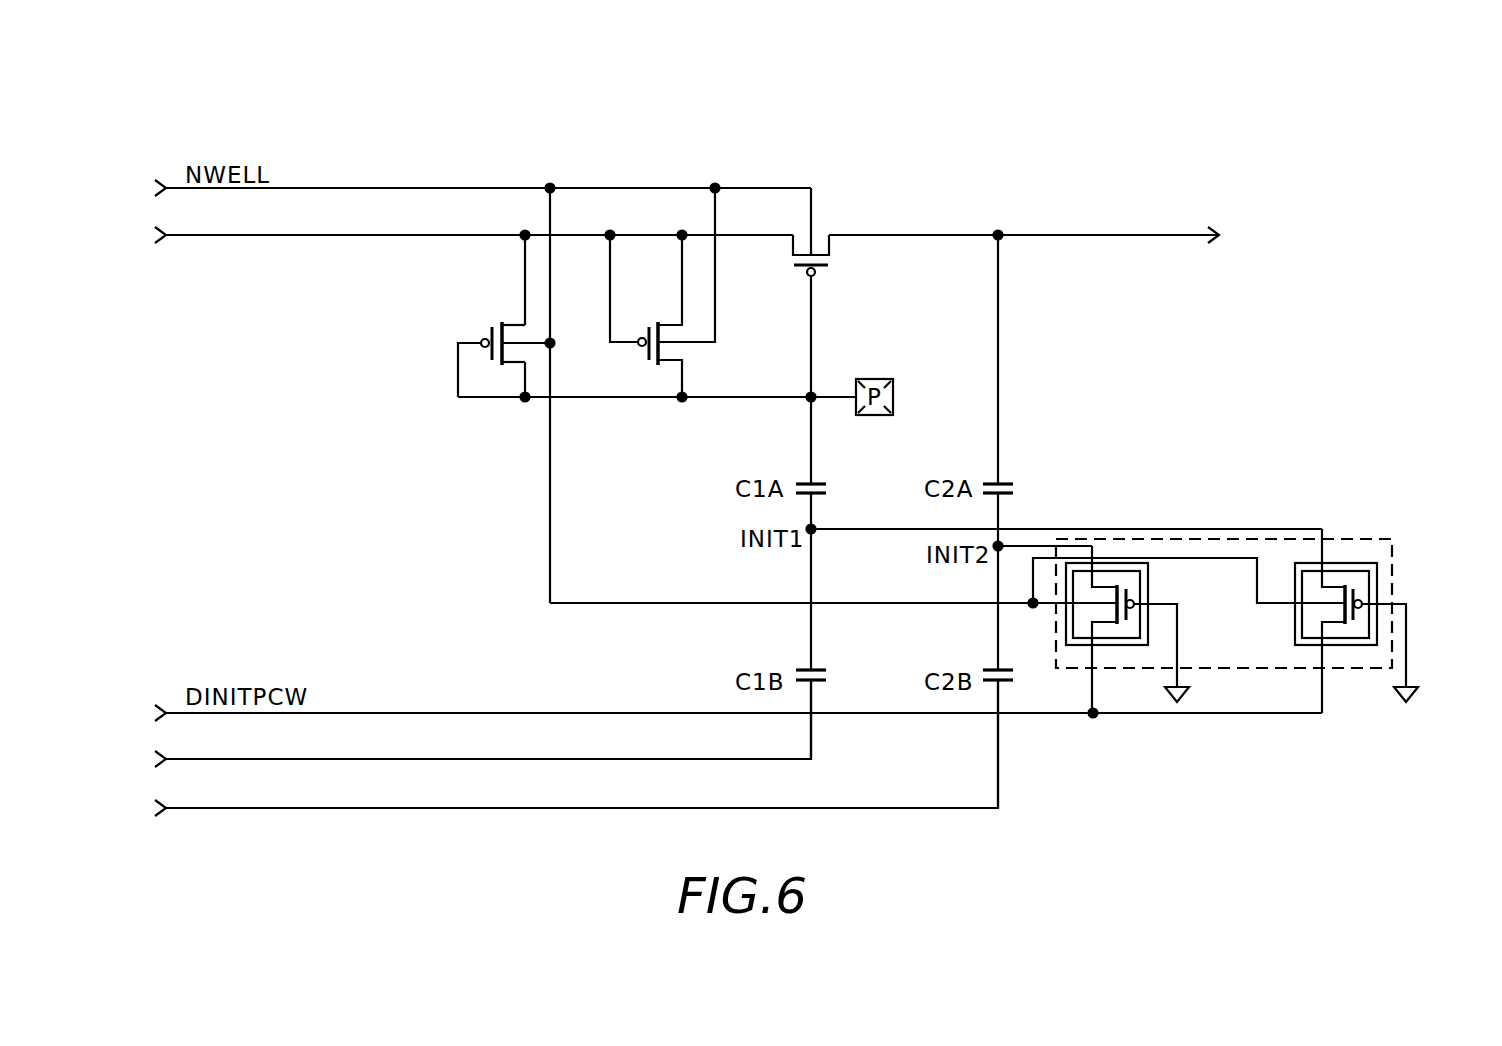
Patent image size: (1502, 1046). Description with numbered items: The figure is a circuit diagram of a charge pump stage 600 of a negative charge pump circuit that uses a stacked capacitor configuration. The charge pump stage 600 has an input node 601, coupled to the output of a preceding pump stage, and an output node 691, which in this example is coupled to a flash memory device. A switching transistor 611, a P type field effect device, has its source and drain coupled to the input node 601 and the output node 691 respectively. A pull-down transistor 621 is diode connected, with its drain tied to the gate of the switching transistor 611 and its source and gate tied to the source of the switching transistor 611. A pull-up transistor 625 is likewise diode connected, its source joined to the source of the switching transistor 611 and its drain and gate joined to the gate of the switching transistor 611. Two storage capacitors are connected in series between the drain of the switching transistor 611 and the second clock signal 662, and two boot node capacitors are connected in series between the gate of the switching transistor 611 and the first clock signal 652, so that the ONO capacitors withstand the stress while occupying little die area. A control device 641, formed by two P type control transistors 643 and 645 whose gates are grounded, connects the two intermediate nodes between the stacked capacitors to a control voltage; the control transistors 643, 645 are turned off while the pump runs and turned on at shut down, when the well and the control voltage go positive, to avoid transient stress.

The charge pump stage 600 is at (1100, 142).
The input node 601 is at (293, 235).
The switching transistor 611 is at (834, 261).
The pull-down transistor 621 is at (652, 367).
The pull-up transistor 625 is at (493, 324).
The control device 641 is at (1352, 538).
The control transistor 643 is at (1378, 580).
The control transistor 645 is at (1148, 572).
The clock signal CLK1 652 is at (291, 759).
The clock signal CLK2 662 is at (291, 807).
The output node 691 is at (1192, 243).